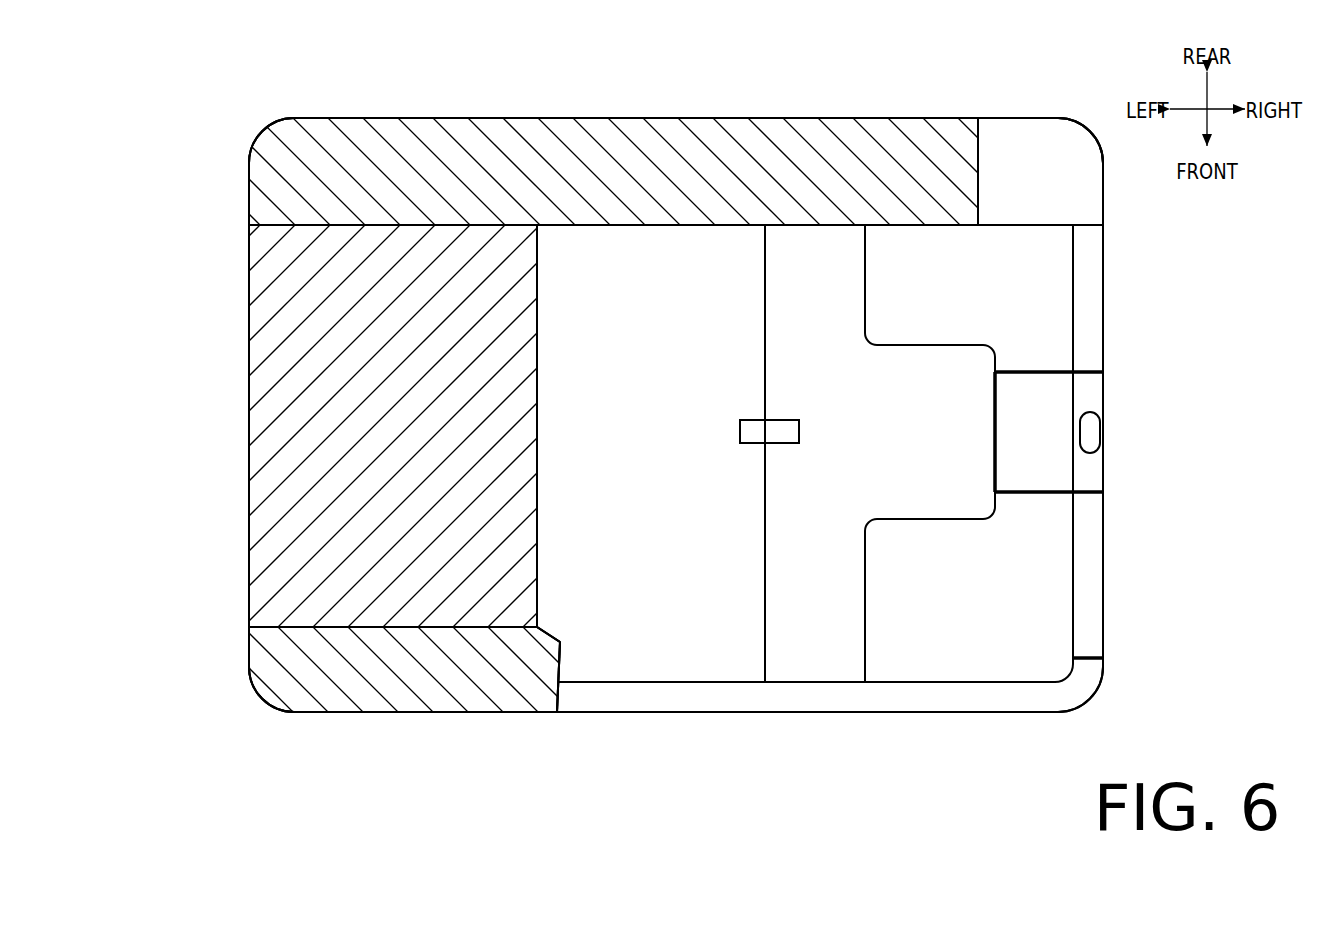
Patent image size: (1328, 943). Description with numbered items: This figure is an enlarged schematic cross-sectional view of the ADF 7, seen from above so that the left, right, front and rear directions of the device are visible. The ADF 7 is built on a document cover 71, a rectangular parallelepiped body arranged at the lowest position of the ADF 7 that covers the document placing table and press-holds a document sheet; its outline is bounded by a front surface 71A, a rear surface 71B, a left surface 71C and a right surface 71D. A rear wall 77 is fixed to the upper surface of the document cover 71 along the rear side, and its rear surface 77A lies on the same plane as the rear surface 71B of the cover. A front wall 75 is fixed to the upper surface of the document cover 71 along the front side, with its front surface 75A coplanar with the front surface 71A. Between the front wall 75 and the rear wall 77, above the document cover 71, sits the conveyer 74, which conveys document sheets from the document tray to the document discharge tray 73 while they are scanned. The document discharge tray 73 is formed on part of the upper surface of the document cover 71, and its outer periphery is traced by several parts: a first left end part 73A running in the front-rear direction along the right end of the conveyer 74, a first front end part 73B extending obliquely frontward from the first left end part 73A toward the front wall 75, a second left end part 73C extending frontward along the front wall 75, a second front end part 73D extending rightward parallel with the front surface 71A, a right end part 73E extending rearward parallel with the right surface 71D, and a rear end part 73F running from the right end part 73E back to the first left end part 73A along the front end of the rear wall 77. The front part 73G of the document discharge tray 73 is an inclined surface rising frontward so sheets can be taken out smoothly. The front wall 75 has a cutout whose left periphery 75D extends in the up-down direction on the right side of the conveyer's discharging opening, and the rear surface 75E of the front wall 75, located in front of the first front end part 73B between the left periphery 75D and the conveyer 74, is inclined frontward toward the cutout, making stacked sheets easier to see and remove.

The ADF 7 is at (253, 118).
The document cover 71 is at (1105, 313).
The front surface of document cover 71A is at (930, 712).
The rear surface of document cover 71B is at (995, 119).
The left surface of document cover 71C is at (250, 352).
The right surface of document cover 71D is at (1105, 356).
The document discharge tray 73 is at (1062, 265).
The first left end part 73A is at (522, 575).
The first front end part 73B is at (550, 637).
The second left end part 73C is at (557, 698).
The second front end part 73D is at (786, 682).
The right end part 73E is at (1075, 522).
The rear end part 73F is at (723, 225).
The front part of document discharge tray 73G is at (652, 682).
The conveyer 74 is at (539, 393).
The front wall 75 is at (343, 712).
The front surface of front wall 75A is at (407, 712).
The left periphery 75D is at (562, 665).
The rear surface of front wall 75E is at (545, 636).
The rear wall 77 is at (558, 119).
The rear surface of rear wall 77A is at (628, 119).